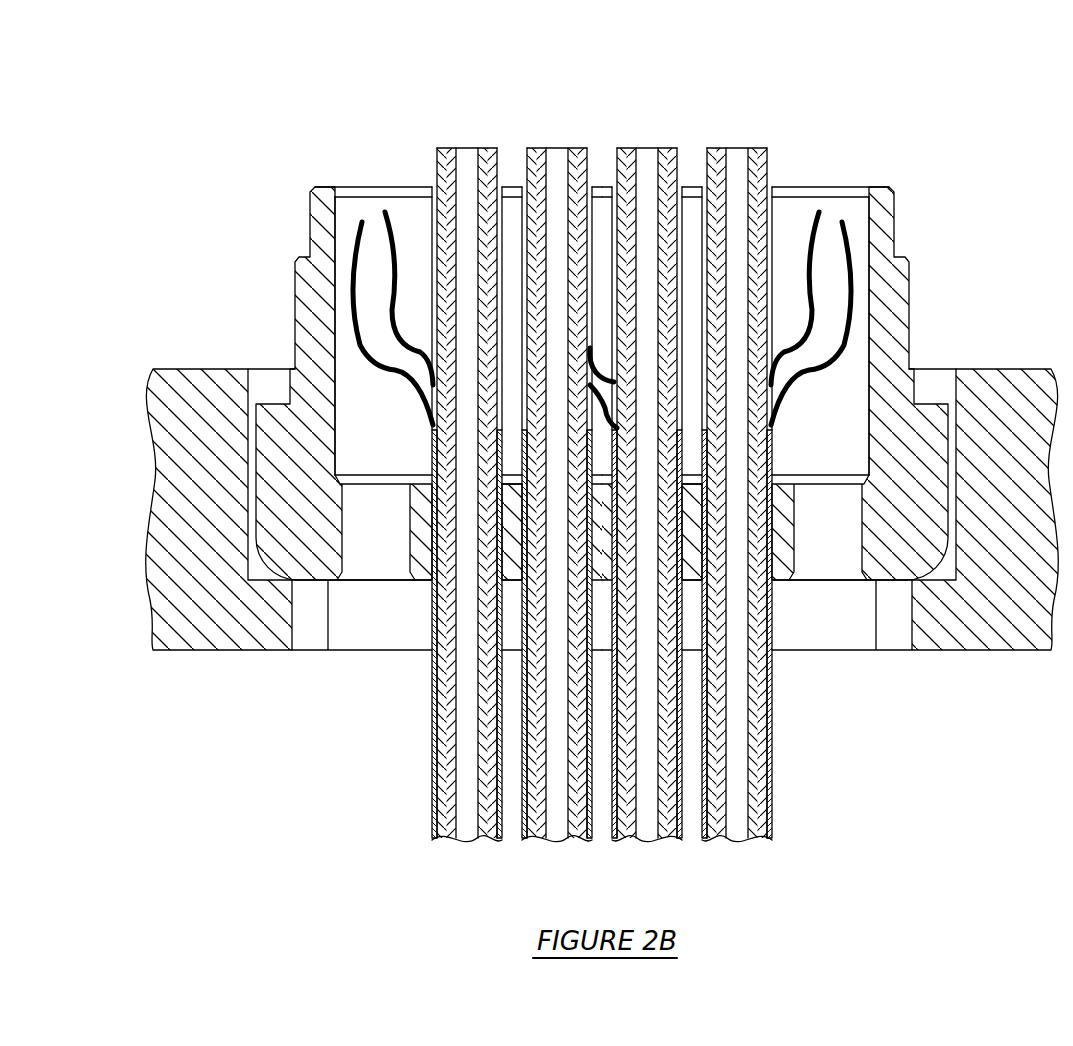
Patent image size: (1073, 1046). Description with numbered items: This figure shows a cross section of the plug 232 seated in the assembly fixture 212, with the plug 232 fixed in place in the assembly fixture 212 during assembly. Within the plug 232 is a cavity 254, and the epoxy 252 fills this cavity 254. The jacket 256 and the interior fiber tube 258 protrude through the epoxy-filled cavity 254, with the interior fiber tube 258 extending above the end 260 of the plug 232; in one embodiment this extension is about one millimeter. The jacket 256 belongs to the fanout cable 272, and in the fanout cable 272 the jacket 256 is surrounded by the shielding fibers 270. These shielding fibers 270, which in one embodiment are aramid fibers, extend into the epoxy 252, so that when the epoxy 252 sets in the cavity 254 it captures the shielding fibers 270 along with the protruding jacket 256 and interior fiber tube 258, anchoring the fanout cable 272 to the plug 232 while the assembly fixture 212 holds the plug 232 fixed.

The assembly fixture 212 is at (213, 663).
The plug 232 is at (283, 163).
The epoxy 252 is at (358, 203).
The cavity 254 is at (370, 190).
The jacket 256 is at (433, 244).
The interior fiber tube 258 is at (488, 148).
The end 260 is at (418, 190).
The shielding fibers 270 is at (357, 275).
The fanout cable 272 is at (413, 755).